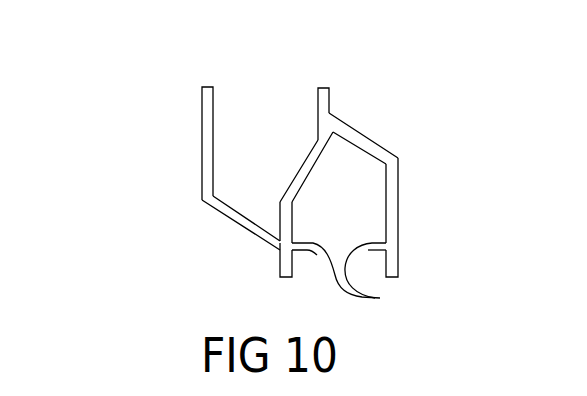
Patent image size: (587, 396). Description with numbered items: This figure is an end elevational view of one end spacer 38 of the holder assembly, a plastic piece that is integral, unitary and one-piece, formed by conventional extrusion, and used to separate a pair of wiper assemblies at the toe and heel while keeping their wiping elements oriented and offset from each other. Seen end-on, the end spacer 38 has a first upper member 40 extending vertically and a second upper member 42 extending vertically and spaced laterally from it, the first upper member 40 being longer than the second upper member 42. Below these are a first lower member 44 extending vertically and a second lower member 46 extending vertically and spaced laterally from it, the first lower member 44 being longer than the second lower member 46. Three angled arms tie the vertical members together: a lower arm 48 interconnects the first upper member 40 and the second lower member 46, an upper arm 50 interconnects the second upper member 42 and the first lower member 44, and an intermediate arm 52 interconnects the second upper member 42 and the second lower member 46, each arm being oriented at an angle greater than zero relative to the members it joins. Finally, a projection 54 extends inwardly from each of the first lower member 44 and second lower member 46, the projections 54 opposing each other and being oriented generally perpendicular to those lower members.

The end spacer 38 is at (158, 95).
The first upper member 40 is at (201, 143).
The second upper member 42 is at (330, 102).
The first lower member 44 is at (399, 218).
The second lower member 46 is at (280, 263).
The lower arm 48 is at (241, 228).
The upper arm 50 is at (365, 132).
The intermediate arm 52 is at (299, 170).
The projection 54 is at (349, 276).